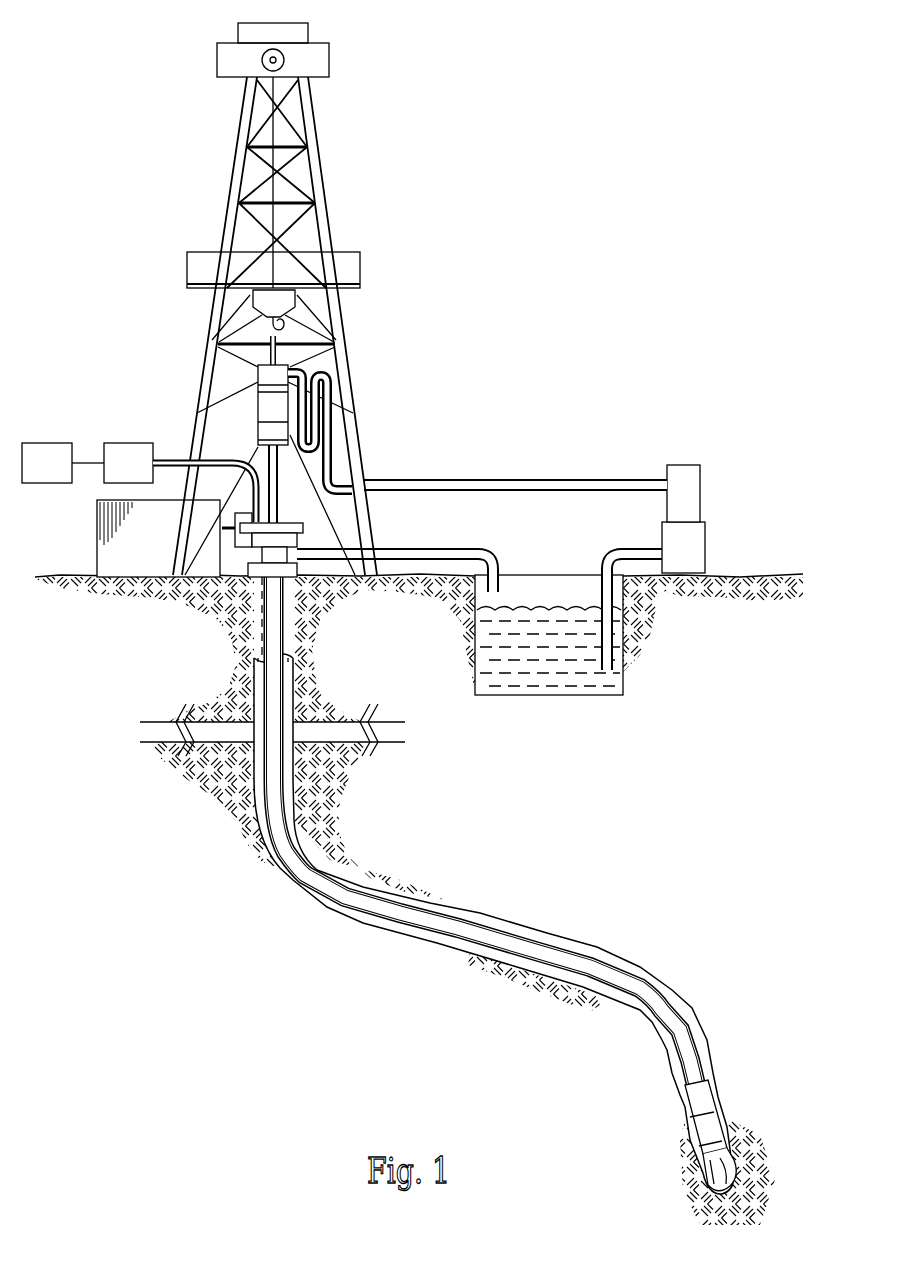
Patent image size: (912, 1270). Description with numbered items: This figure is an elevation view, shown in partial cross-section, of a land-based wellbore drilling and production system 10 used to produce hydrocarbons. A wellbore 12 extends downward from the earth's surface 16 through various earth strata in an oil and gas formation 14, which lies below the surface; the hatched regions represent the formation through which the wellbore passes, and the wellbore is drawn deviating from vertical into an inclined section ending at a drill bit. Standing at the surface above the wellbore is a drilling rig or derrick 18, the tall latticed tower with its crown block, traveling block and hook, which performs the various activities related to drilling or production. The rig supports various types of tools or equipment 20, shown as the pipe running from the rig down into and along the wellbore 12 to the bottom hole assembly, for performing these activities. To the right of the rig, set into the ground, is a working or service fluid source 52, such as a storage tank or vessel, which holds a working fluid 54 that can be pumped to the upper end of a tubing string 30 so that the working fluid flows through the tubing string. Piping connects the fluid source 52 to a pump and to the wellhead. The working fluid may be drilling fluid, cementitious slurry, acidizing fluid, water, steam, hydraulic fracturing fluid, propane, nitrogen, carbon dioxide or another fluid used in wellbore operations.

The wellbore drilling and production system 10 is at (412, 615).
The wellbore 12 is at (324, 916).
The oil and gas formation 14 is at (434, 817).
The earth's surface 16 is at (750, 575).
The drilling rig or derrick 18 is at (315, 173).
The tools or equipment 20 is at (482, 932).
The tubing string 30 is at (273, 688).
The working or service fluid source 52 is at (550, 695).
The working fluid 54 is at (540, 618).